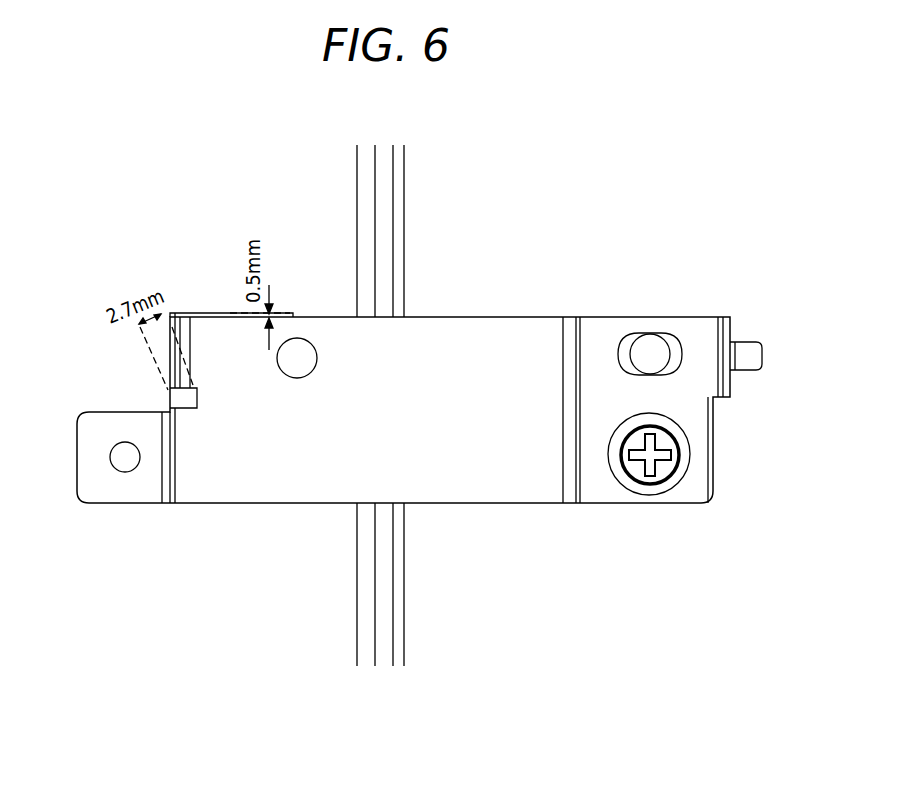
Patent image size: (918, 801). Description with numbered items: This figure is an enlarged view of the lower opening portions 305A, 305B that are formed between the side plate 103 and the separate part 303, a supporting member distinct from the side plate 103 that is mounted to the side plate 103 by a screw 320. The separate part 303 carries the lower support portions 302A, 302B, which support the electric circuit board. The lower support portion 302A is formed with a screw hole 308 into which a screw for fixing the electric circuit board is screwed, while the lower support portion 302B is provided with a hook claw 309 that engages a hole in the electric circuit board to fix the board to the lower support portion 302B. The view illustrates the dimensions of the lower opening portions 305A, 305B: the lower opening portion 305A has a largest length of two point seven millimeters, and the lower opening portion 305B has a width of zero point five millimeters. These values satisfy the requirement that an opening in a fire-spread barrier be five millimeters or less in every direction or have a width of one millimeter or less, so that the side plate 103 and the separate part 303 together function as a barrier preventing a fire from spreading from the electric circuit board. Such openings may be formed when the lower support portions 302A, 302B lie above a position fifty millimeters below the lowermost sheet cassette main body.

The side plate 103 is at (323, 208).
The separate part 303 is at (490, 473).
The lower opening portion 305A is at (173, 400).
The lower opening portion 305B is at (203, 313).
The lower support portion 302A is at (102, 505).
The lower support portion 302B is at (732, 388).
The screw hole 308 is at (128, 462).
The hook claw 309 is at (743, 355).
The screw 320 is at (635, 463).